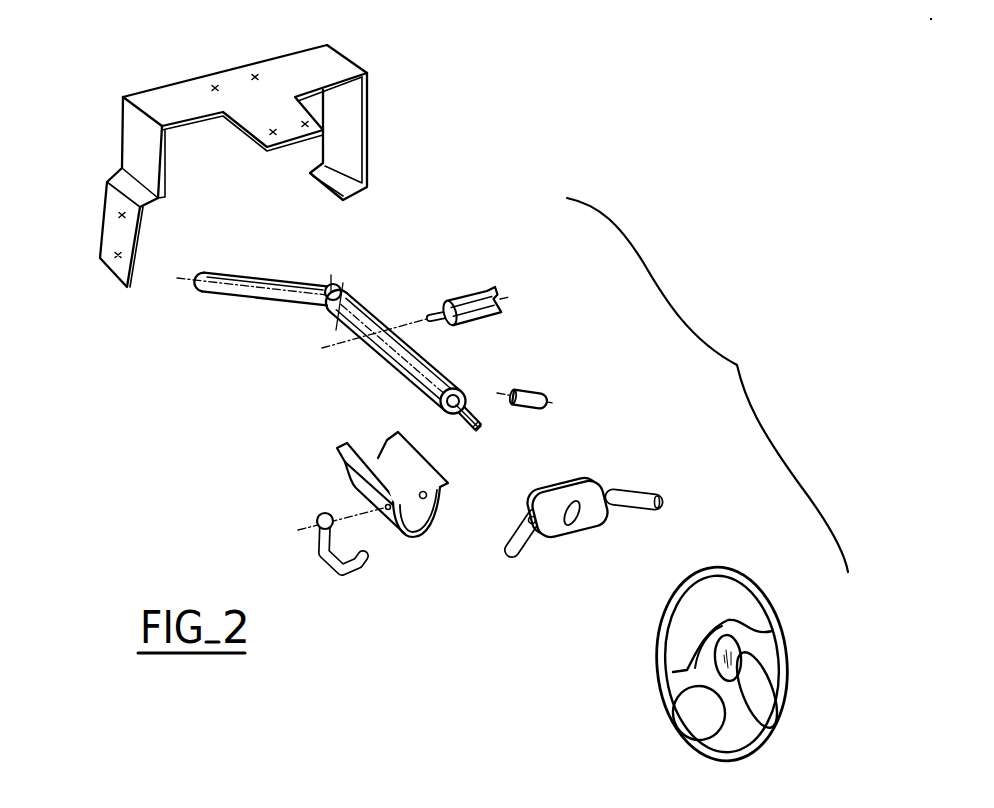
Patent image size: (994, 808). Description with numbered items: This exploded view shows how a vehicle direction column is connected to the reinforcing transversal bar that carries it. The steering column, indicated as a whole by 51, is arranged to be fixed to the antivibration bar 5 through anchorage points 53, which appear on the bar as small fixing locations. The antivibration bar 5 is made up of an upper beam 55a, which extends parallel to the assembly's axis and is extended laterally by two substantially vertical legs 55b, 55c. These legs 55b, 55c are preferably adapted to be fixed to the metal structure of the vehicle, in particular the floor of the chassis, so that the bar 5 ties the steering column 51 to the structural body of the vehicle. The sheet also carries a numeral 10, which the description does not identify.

The antivibration bar 5 is at (257, 144).
The anchorage points 53 is at (215, 88).
The upper beam 55a is at (270, 103).
The vertical leg 55b is at (348, 130).
The vertical leg 55c is at (120, 170).
The steering column 51 is at (707, 385).
The steering column assembly 10 is at (609, 685).